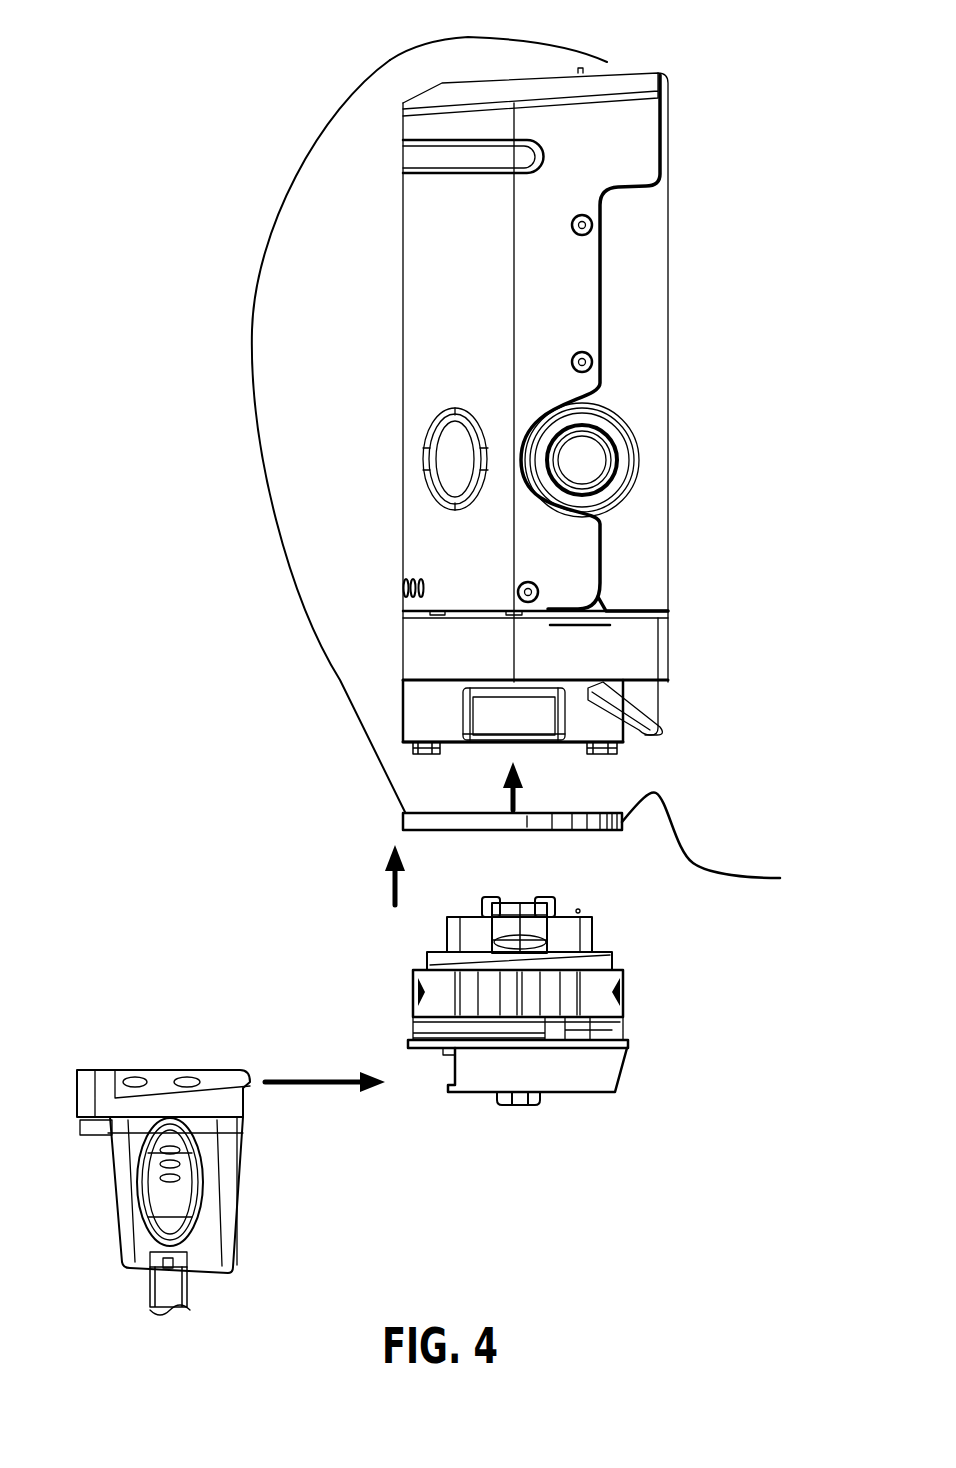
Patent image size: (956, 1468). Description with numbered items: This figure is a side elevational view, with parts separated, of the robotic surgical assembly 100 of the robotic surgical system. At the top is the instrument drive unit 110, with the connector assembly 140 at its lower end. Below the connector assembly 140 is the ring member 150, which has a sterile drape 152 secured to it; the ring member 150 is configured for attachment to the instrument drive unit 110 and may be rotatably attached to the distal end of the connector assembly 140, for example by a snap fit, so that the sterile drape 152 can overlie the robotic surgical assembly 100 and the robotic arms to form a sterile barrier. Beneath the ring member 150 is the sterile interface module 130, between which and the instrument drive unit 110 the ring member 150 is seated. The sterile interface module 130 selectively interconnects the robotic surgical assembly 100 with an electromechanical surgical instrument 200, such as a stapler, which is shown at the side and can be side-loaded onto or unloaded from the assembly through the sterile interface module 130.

The robotic surgical assembly 100 is at (770, 43).
The instrument drive unit 110 is at (403, 388).
The sterile interface module 130 is at (623, 938).
The connector assembly 140 is at (403, 736).
The ring member 150 is at (415, 823).
The sterile drape 152 is at (252, 330).
The electromechanical surgical instrument 200 is at (108, 1048).